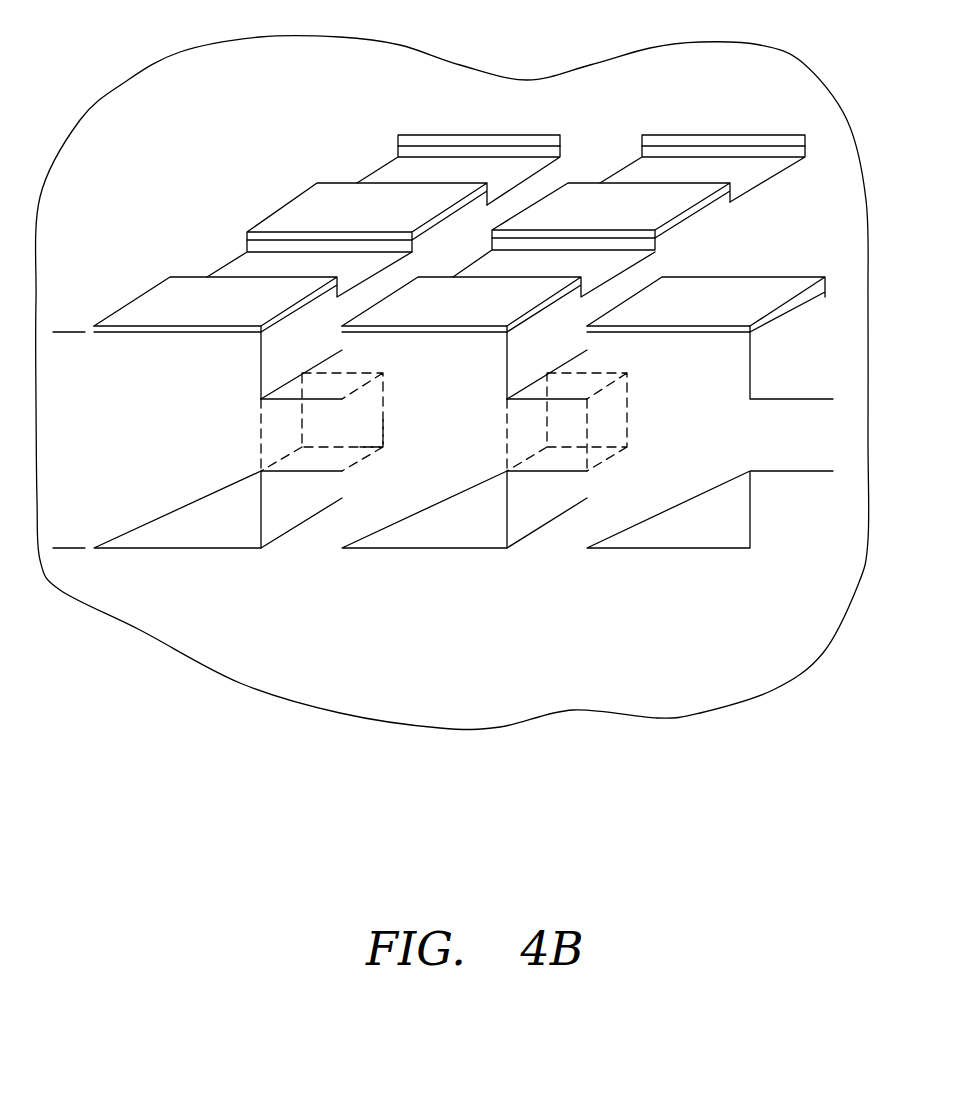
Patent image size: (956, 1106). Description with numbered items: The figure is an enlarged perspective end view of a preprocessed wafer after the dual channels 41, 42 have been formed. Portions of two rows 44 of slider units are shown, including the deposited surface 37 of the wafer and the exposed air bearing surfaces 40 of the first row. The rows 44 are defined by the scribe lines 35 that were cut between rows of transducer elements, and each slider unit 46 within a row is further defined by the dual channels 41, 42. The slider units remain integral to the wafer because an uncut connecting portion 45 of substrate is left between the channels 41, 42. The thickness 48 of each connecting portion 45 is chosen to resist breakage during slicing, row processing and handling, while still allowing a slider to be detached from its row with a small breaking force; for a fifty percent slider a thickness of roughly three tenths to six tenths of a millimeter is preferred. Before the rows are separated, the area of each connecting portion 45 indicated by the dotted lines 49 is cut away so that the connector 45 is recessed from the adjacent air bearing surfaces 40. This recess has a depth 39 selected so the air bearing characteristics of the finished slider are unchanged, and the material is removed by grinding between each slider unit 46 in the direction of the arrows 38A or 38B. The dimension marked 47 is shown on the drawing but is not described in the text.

The scribe lines 35 is at (453, 180).
The deposited surface 37 is at (652, 193).
The grinding direction arrow 38A is at (315, 366).
The grinding direction arrow 38B is at (299, 466).
The recess depth 39 is at (598, 416).
The air bearing surface 40 is at (730, 518).
The channel 41 is at (535, 369).
The channel 42 is at (318, 554).
The rows of slider units 44 is at (158, 267).
The connecting portion 45 is at (444, 422).
The slider unit 46 is at (261, 562).
The pillar height 47 is at (67, 344).
The thickness of connecting portion 48 is at (518, 411).
The dotted lines 49 is at (372, 455).